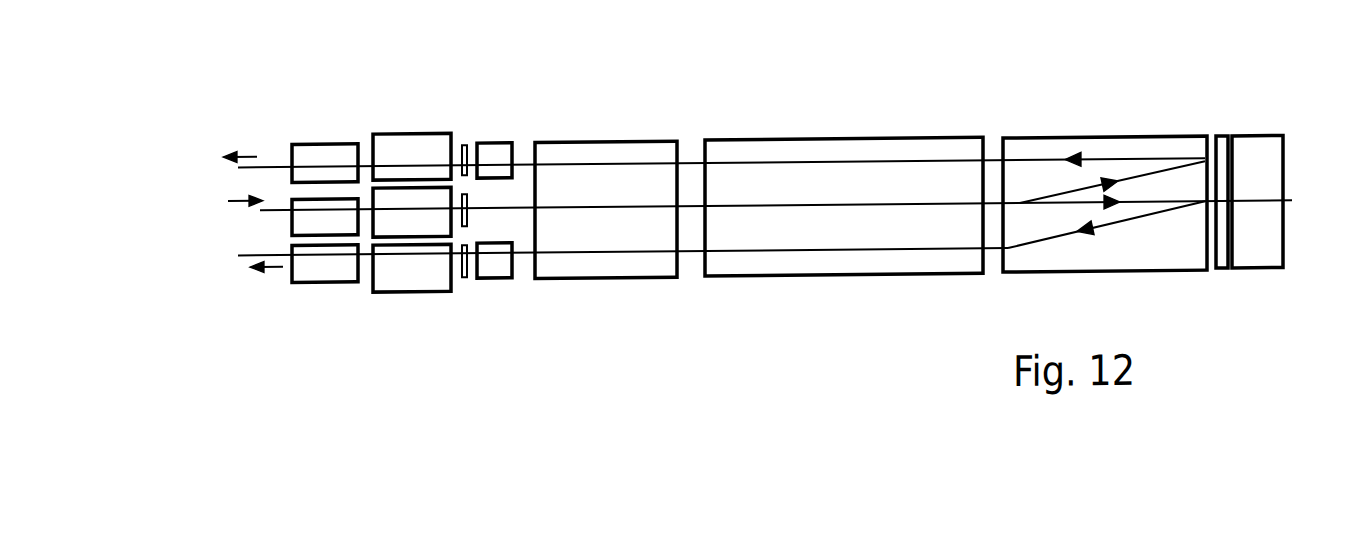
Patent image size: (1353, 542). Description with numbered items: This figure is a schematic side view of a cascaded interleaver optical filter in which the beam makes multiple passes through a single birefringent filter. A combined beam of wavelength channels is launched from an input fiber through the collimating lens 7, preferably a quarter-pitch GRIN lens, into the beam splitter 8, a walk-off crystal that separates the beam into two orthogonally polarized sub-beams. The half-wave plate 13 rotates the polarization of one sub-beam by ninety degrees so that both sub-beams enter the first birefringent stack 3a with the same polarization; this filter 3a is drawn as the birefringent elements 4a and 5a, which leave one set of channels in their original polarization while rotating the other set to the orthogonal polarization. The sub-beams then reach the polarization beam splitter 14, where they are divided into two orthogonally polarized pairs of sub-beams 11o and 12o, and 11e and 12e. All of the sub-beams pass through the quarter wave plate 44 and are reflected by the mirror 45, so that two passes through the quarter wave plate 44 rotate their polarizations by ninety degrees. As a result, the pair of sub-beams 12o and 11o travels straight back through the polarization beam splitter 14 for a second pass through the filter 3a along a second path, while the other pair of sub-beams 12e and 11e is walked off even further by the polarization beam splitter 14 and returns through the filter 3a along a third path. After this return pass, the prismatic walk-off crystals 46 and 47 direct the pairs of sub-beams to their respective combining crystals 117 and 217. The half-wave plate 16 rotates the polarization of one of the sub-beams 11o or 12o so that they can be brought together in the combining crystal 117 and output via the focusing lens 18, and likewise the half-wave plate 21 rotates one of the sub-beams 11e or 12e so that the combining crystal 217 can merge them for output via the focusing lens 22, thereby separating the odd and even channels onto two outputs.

The first birefringent stack 3a is at (673, 82).
The birefringent element 4a is at (607, 139).
The birefringent element 5a is at (843, 139).
The collimating lens 7 is at (293, 223).
The beam splitter 8 is at (412, 212).
The sub-beam 11o is at (1143, 177).
The sub-beam 12o is at (1175, 161).
The sub-beam 11e is at (1127, 224).
The sub-beam 12e is at (1159, 206).
The half-wave plate 13 is at (469, 217).
The polarization beam splitter 14 is at (1105, 140).
The half-wave plate 16 is at (464, 141).
The focusing lens 18 is at (313, 138).
The half-wave plate 21 is at (464, 276).
The focusing lens 22 is at (330, 278).
The quarter wave plate 44 is at (1226, 140).
The mirror 45 is at (1289, 208).
The prismatic walk-off crystal 46 is at (493, 140).
The prismatic walk-off crystal 47 is at (496, 278).
The combining crystal 117 is at (409, 131).
The combining crystal 217 is at (412, 290).